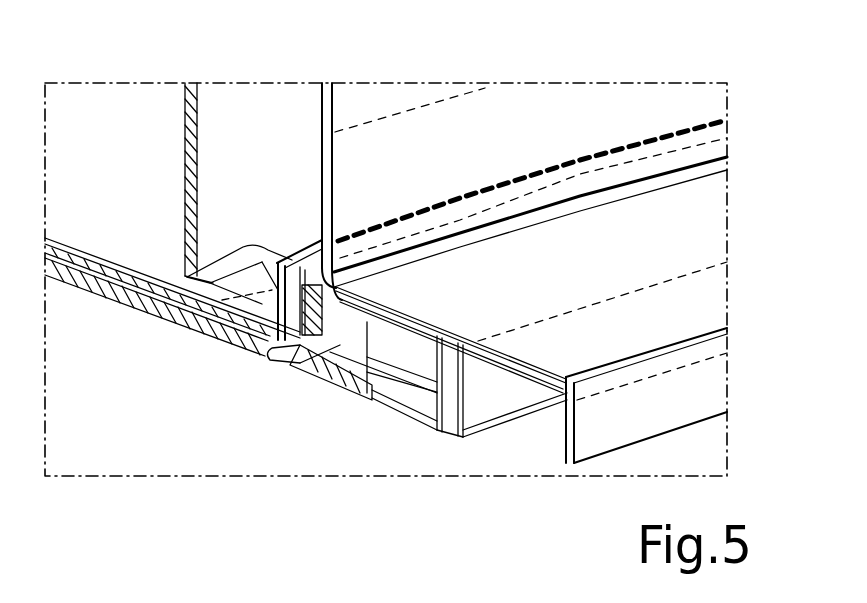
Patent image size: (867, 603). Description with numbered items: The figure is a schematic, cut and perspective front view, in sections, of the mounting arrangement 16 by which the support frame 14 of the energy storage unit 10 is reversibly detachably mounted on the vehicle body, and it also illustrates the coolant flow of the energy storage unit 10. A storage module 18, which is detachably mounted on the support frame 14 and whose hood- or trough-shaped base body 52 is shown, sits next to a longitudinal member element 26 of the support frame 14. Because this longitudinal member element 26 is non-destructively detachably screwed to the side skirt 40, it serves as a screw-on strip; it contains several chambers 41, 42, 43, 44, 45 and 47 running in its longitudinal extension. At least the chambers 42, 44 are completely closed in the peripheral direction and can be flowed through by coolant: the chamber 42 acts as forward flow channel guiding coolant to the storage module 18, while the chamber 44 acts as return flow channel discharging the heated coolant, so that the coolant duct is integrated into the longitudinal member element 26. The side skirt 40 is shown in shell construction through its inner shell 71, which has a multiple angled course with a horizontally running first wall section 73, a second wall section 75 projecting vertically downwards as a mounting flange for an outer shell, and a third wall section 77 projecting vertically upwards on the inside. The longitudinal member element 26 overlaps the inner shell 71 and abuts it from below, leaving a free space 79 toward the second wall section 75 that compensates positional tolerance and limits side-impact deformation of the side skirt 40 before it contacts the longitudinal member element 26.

The energy storage unit 10 is at (372, 407).
The support frame 14 is at (460, 442).
The mounting arrangement 16 is at (545, 447).
The storage module 18 is at (267, 107).
The longitudinal member element 26 is at (497, 382).
The side skirt 40 is at (670, 388).
The chamber 41 is at (370, 400).
The chamber 42 is at (340, 240).
The chamber 43 is at (418, 352).
The chamber 44 is at (367, 309).
The chamber 45 is at (447, 430).
The chamber 47 is at (455, 358).
The base body 52 is at (216, 107).
The inner shell 71 is at (692, 212).
The first wall section 73 is at (698, 254).
The second wall section 75 is at (702, 384).
The third wall section 77 is at (590, 100).
The free space 79 is at (557, 429).